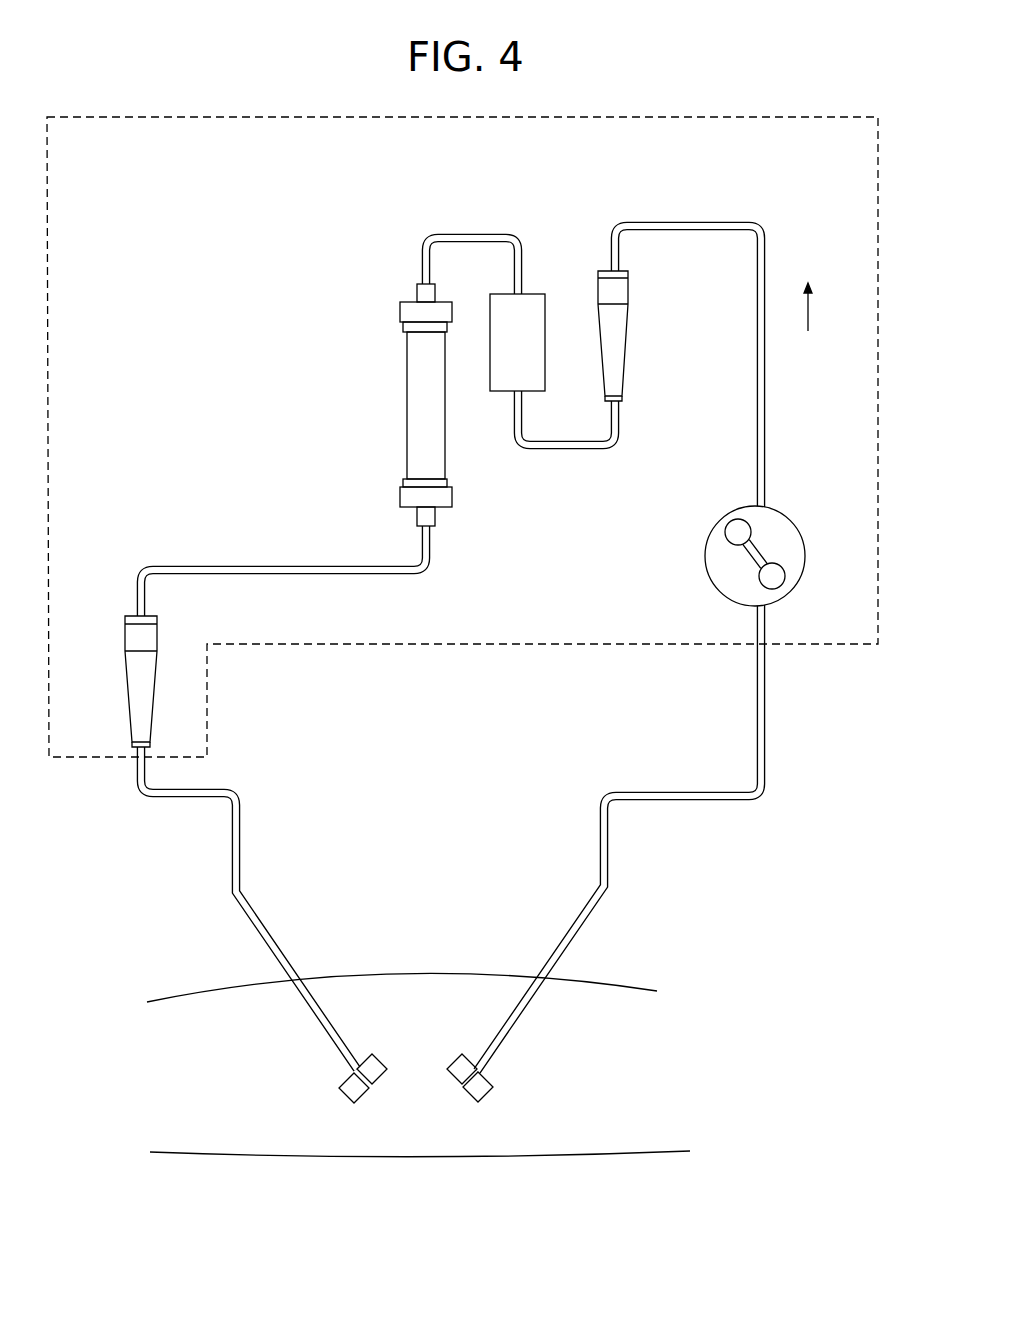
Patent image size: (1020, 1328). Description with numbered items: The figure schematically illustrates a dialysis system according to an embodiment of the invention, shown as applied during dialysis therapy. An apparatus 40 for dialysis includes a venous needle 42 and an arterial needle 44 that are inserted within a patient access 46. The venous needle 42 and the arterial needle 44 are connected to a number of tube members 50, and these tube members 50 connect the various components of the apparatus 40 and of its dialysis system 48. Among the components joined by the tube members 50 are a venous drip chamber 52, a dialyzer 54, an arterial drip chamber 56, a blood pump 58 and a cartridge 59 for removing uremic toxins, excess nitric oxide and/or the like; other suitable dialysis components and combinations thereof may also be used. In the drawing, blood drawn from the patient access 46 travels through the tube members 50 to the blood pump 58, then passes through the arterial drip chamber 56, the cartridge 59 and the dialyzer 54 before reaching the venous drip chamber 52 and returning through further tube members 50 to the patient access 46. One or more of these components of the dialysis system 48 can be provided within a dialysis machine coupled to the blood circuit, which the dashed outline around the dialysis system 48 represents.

The apparatus for dialysis 40 is at (792, 222).
The venous needle 42 is at (357, 1070).
The arterial needle 44 is at (477, 1072).
The patient access 46 is at (432, 1031).
The dialysis system 48 is at (203, 265).
The tube members 50 is at (470, 233).
The venous drip chamber 52 is at (137, 685).
The dialyzer 54 is at (418, 412).
The arterial drip chamber 56 is at (617, 353).
The blood pump 58 is at (713, 553).
The cartridge 59 is at (535, 303).